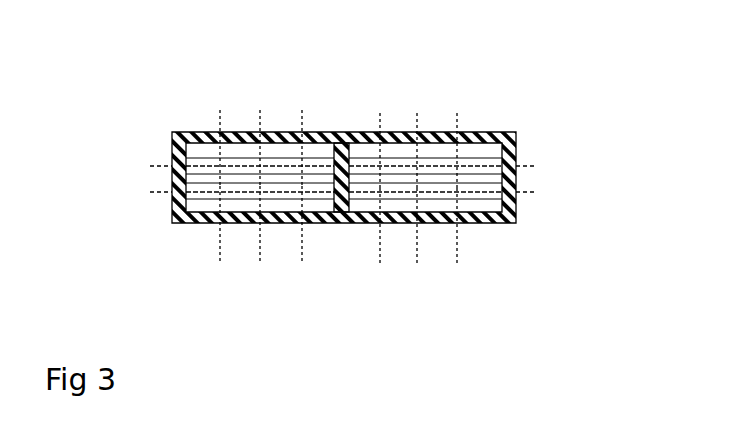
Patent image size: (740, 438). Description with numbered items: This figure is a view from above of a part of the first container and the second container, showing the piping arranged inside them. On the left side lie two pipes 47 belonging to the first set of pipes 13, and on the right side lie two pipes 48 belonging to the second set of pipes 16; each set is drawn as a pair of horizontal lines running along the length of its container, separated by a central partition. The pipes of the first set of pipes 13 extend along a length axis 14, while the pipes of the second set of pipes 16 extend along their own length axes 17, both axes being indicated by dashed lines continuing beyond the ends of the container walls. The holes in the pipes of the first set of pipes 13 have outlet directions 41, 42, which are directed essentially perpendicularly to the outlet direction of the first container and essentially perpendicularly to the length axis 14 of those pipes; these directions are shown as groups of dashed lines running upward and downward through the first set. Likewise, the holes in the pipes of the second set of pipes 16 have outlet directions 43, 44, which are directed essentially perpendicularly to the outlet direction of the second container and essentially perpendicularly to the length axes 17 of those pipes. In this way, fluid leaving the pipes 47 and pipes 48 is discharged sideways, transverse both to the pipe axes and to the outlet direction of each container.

The first set of pipes 13 is at (182, 242).
The length axis 14 is at (152, 191).
The second set of pipes 16 is at (497, 235).
The length axes 17 is at (534, 166).
The outlet direction 41 is at (301, 110).
The outlet direction 42 is at (302, 261).
The outlet direction 43 is at (380, 113).
The outlet direction 44 is at (380, 263).
The pipes 47 is at (200, 192).
The pipes 48 is at (480, 187).